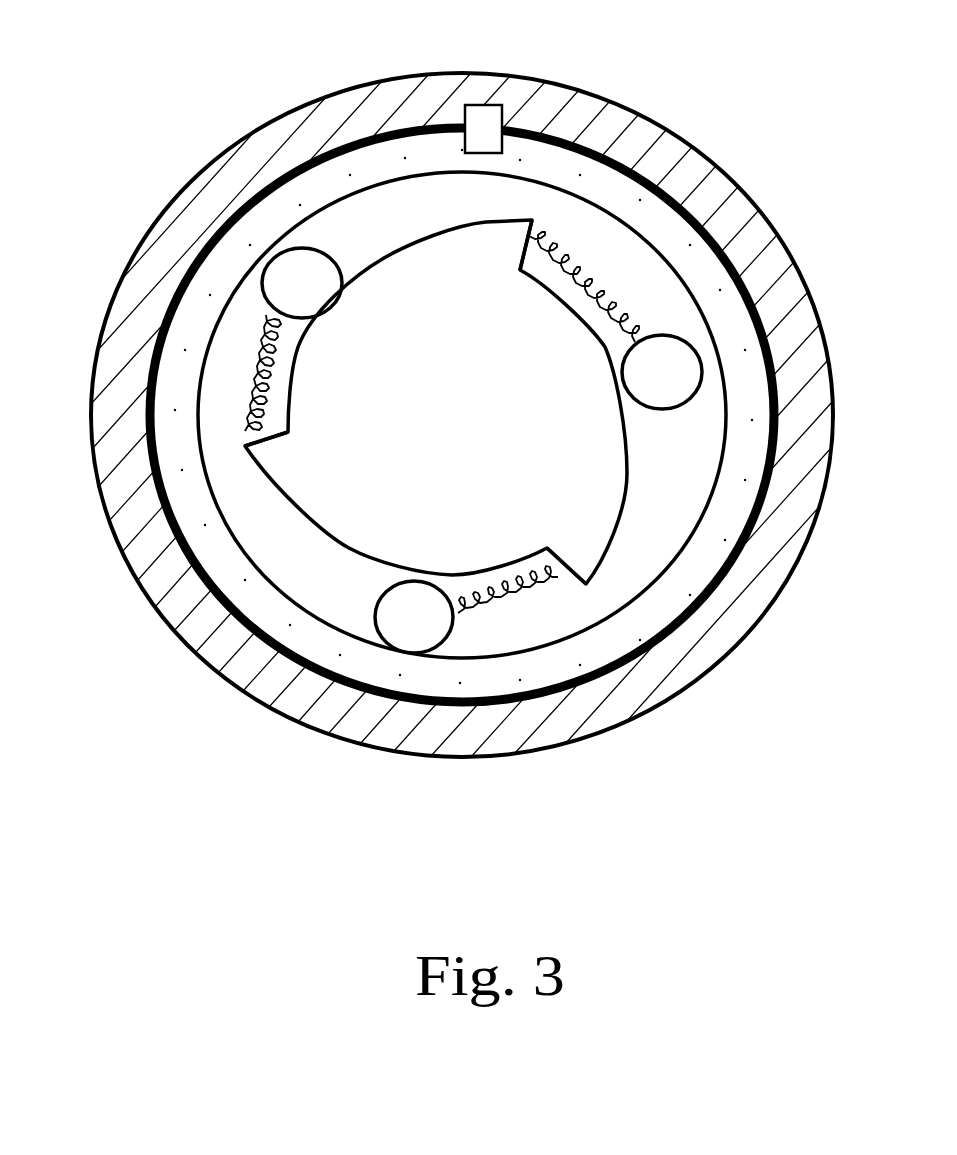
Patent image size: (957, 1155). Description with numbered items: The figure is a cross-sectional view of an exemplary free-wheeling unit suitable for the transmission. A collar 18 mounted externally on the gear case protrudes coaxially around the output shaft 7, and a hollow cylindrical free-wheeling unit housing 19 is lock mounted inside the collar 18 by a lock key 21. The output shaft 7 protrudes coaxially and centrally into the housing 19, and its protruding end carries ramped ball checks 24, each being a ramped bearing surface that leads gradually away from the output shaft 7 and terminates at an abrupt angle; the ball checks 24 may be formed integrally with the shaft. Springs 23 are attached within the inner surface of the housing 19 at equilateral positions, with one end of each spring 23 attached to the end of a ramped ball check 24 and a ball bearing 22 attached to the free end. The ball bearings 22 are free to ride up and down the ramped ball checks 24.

The output shaft 7 is at (473, 439).
The collar 18 is at (188, 183).
The free-wheeling unit housing 19 is at (315, 168).
The lock key 21 is at (503, 107).
The ball bearings 22 is at (400, 652).
The springs 23 is at (613, 277).
The ramped ball checks 24 is at (424, 402).